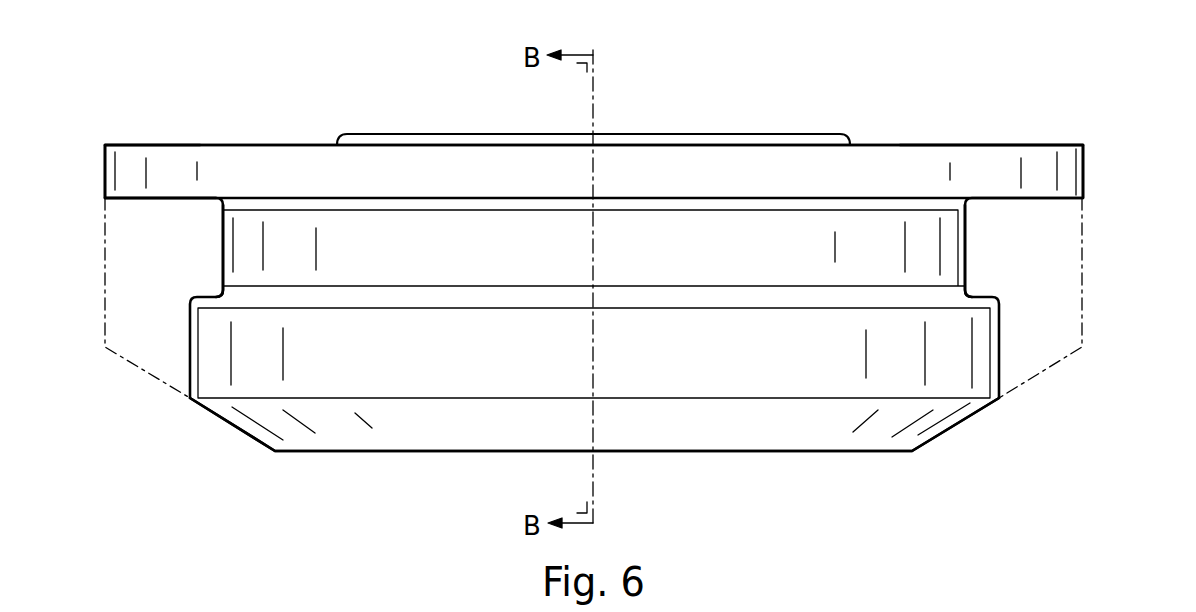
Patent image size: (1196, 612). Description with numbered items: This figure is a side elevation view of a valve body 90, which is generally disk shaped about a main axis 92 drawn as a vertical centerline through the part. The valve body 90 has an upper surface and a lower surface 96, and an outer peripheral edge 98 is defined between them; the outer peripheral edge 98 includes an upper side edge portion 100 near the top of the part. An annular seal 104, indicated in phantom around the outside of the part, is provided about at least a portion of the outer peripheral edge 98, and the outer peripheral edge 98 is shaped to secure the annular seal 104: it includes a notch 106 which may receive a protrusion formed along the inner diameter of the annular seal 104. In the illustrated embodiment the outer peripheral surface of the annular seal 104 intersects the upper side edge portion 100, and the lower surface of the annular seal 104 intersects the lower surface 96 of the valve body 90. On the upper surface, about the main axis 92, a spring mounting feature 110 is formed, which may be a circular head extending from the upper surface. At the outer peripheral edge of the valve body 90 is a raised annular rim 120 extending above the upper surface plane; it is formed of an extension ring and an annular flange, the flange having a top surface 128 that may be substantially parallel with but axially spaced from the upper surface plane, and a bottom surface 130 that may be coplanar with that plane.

The valve body 90 is at (980, 84).
The main axis 92 is at (593, 112).
The lower surface 96 is at (890, 452).
The outer peripheral edge 98 is at (968, 254).
The upper side edge portion 100 is at (1085, 165).
The annular seal 104 is at (1085, 233).
The notch 106 is at (223, 256).
The spring mounting feature 110 is at (450, 134).
The raised annular rim 120 is at (1024, 130).
The top surface 128 is at (130, 145).
The bottom surface 130 is at (165, 200).